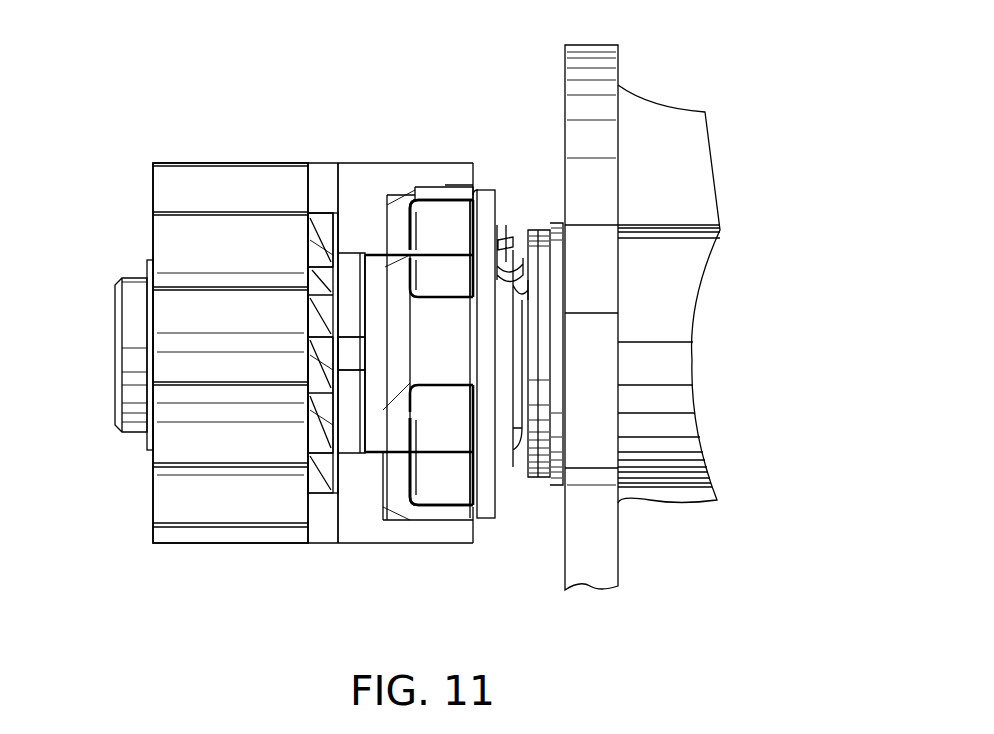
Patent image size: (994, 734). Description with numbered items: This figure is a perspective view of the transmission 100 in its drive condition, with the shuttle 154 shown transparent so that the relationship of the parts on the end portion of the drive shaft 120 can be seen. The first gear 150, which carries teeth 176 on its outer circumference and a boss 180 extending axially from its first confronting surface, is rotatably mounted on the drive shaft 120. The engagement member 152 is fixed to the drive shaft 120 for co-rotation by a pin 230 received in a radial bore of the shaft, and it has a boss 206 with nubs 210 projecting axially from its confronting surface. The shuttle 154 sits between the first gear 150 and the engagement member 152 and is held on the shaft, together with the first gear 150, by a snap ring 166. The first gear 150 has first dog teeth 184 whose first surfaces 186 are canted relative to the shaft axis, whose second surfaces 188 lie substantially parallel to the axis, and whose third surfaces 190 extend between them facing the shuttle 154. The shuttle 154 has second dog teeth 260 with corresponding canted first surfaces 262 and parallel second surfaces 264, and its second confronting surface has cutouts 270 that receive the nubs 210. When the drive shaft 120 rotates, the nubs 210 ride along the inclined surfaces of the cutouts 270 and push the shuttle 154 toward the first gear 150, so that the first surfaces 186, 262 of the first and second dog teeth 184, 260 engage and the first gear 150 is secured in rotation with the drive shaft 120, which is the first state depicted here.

The transmission 100 is at (122, 109).
The drive shaft 120 is at (132, 300).
The first gear 150 is at (121, 522).
The engagement member 152 is at (514, 514).
The shuttle 154 is at (384, 106).
The snap ring 166 is at (146, 438).
The teeth 176 is at (205, 178).
The boss 180 is at (352, 265).
The first dog teeth 184 is at (320, 322).
The first surfaces 186 is at (345, 362).
The second surfaces 188 is at (336, 402).
The third surfaces 190 is at (328, 378).
The boss 206 is at (375, 250).
The nub 210 is at (457, 212).
The pin 230 is at (500, 268).
The second dog teeth 260 is at (318, 276).
The first surfaces 262 is at (434, 186).
The second surfaces 264 is at (337, 334).
The cutout 270 is at (393, 414).